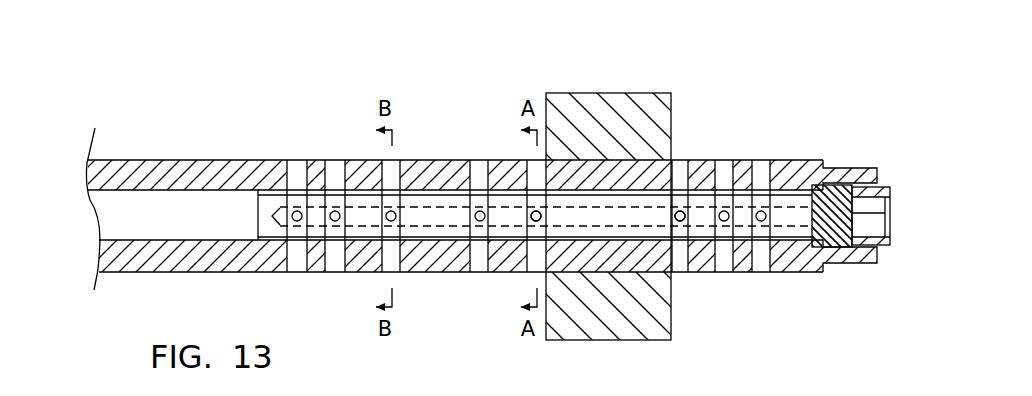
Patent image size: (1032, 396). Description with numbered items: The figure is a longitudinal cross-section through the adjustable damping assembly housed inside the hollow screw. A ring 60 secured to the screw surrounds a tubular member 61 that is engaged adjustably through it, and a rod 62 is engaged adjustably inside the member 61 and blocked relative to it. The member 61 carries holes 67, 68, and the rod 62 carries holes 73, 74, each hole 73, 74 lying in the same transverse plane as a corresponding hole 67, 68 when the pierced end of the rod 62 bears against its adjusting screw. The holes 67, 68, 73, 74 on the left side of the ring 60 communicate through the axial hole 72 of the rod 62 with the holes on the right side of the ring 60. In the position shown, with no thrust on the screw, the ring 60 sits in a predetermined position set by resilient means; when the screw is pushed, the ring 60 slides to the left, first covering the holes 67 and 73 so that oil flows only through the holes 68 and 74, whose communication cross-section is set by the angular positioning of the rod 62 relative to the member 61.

The ring 60 is at (538, 86).
The tubular member 61 is at (185, 157).
The rod 62 is at (796, 274).
The hole 67 is at (682, 157).
The hole 68 is at (330, 157).
The axial hole 72 is at (431, 229).
The hole 73 is at (533, 220).
The hole 74 is at (475, 156).